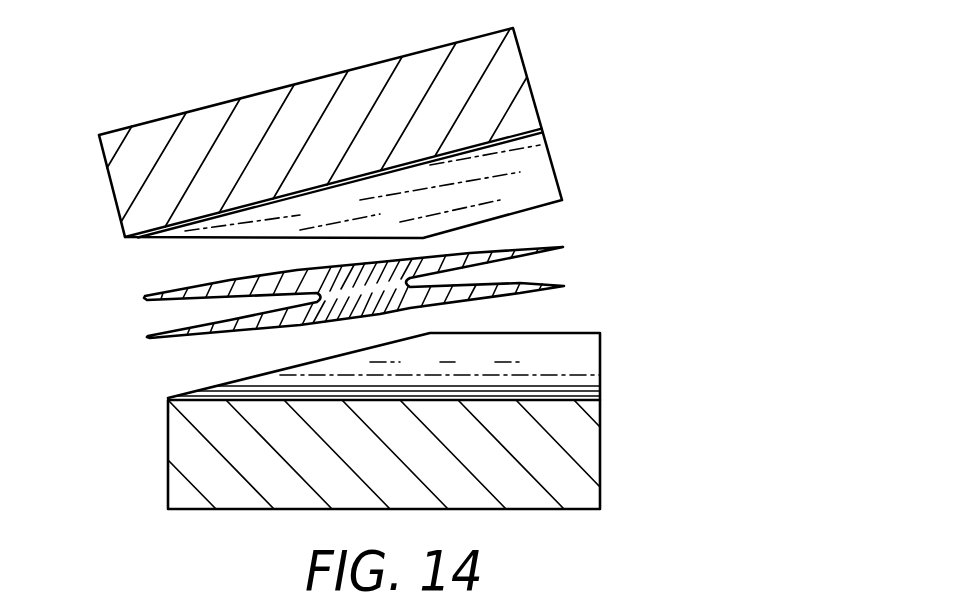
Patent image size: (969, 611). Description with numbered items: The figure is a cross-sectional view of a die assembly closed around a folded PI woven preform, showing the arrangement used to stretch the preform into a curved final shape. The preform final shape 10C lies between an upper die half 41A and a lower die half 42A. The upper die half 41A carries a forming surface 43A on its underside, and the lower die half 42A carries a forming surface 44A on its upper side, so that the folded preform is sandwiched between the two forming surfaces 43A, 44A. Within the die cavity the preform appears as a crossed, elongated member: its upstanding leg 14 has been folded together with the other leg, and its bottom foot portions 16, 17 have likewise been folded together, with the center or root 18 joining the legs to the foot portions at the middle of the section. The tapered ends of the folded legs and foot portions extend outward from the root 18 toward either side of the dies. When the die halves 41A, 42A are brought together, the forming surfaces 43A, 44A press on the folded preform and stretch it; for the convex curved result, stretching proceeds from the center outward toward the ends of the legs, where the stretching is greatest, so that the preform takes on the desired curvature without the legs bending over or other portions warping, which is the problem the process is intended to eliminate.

The die half 41A is at (329, 76).
The forming surface 43A is at (553, 204).
The preform final shape 10C is at (536, 288).
The upstanding leg 14 is at (145, 296).
The bottom foot portion 16 is at (148, 337).
The bottom foot portion 17 is at (565, 247).
The center or root 18 is at (566, 286).
The forming surface 44A is at (588, 334).
The die half 42A is at (600, 463).